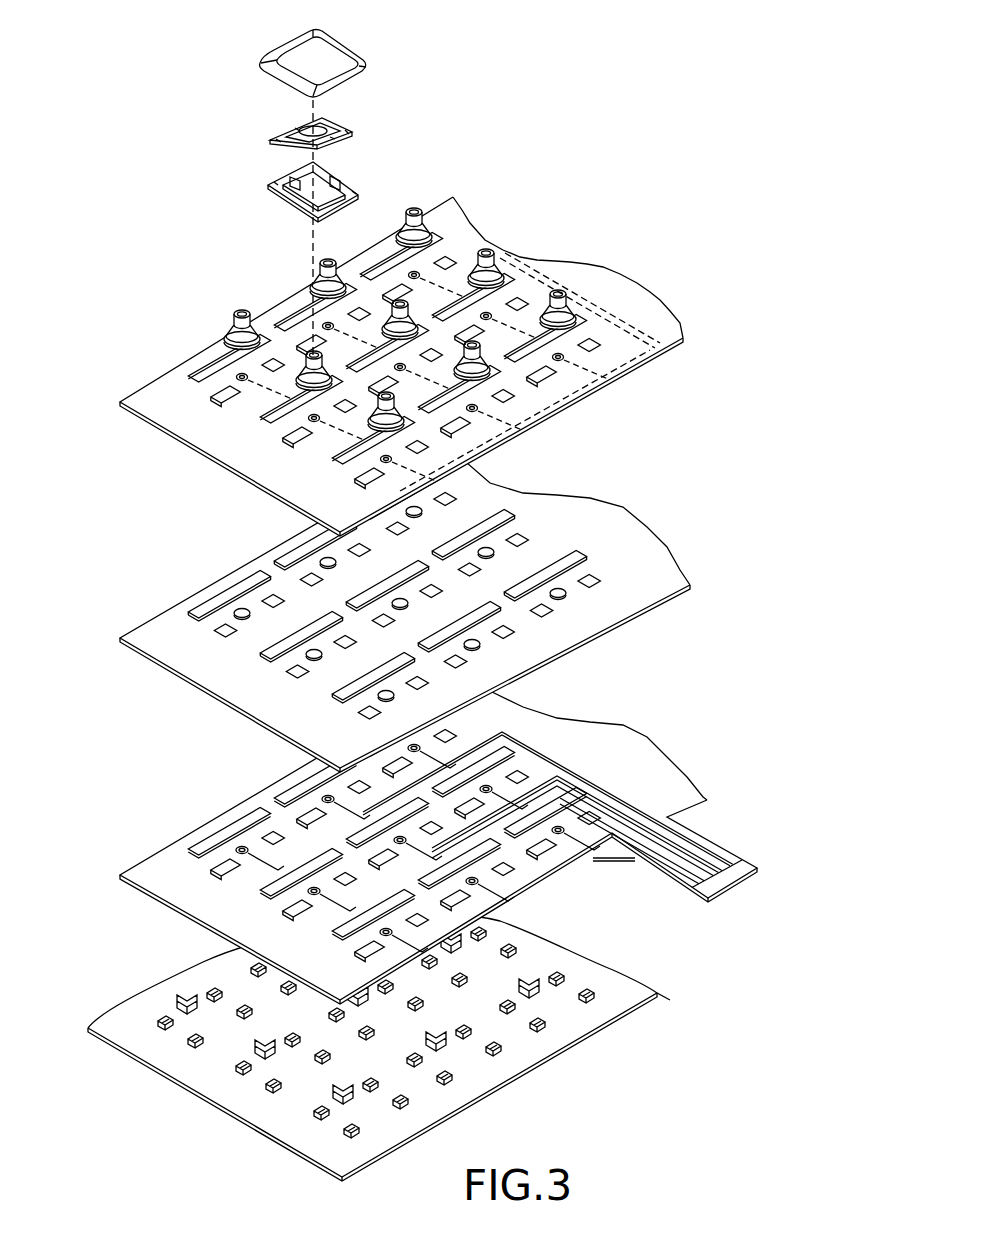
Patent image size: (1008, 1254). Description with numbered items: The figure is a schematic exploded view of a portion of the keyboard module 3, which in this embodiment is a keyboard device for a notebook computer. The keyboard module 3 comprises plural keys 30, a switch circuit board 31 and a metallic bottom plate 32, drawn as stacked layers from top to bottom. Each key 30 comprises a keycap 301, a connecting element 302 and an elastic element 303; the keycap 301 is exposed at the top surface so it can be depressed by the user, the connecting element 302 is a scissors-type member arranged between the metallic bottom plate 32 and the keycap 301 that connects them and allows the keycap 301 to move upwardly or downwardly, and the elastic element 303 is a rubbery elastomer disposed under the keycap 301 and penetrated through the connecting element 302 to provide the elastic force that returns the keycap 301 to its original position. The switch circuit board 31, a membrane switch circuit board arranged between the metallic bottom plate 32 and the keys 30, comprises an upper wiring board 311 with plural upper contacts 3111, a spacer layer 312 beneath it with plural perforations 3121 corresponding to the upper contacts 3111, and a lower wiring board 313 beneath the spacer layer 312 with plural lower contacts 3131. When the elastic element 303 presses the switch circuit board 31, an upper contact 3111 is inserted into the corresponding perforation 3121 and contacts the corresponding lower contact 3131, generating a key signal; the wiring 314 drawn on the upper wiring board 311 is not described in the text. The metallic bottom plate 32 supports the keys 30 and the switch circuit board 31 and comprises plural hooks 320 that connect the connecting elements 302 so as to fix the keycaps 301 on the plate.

The keyboard module 3 is at (688, 82).
The key 30 is at (490, 76).
The keycap 301 is at (333, 61).
The connecting element 302 is at (375, 125).
The elastic element 303 is at (240, 314).
The switch circuit board 31 is at (74, 367).
The upper wiring board 311 is at (382, 366).
The upper contact 3111 is at (222, 396).
The spacer layer 312 is at (386, 606).
The perforation 3121 is at (490, 549).
The lower wiring board 313 is at (419, 840).
The lower contact 3131 is at (220, 869).
The circuit trace 314 is at (490, 314).
The metallic bottom plate 32 is at (382, 1031).
The hook 320 is at (603, 993).